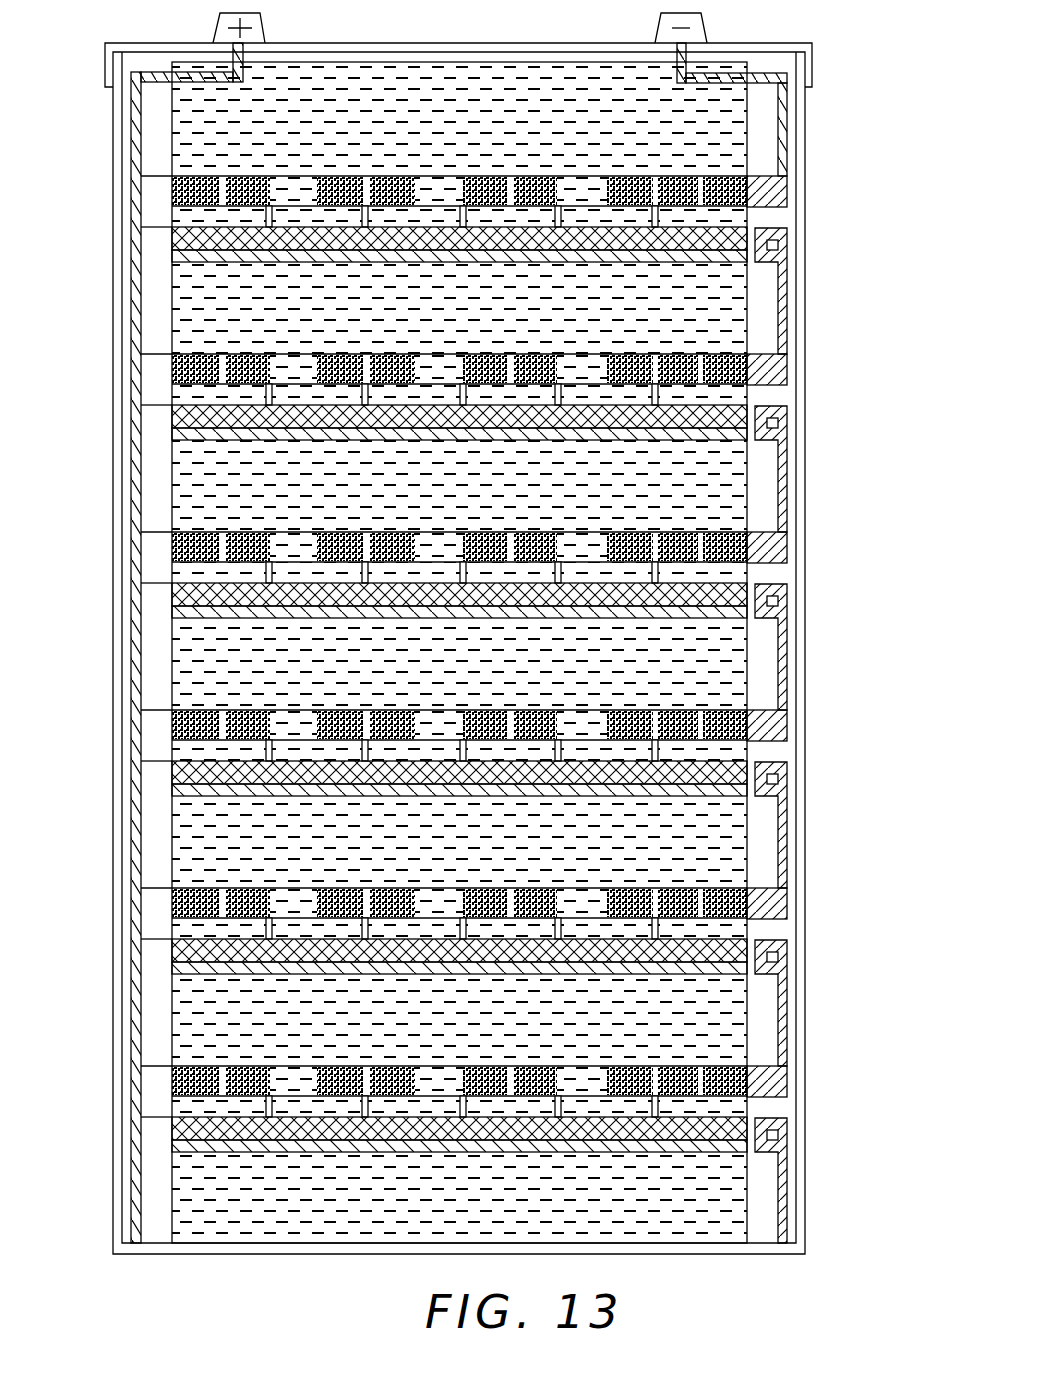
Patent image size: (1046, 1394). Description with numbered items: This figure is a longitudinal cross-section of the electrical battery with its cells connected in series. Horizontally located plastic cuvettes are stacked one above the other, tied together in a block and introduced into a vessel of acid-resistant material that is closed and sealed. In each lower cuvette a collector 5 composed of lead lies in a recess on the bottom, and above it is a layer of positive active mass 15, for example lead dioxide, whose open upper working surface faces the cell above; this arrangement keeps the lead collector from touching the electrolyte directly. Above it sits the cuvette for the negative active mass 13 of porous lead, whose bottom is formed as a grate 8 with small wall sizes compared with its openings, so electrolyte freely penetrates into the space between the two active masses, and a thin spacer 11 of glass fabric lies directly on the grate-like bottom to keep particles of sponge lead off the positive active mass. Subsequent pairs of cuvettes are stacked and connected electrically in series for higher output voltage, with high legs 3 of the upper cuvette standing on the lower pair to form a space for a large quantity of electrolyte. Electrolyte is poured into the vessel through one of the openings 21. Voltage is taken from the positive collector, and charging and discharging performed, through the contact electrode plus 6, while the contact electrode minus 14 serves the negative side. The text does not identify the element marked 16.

The high legs 3 is at (760, 308).
The collector 5 is at (703, 258).
The contact electrode plus 6 is at (140, 155).
The grate 8 is at (710, 753).
The spacer 11 is at (733, 383).
The negative active mass 13 is at (680, 533).
The contact electrode minus 14 is at (781, 118).
The positive active mass 15 is at (722, 224).
The negative electrode 16 is at (640, 790).
The opening 21 is at (637, 1022).